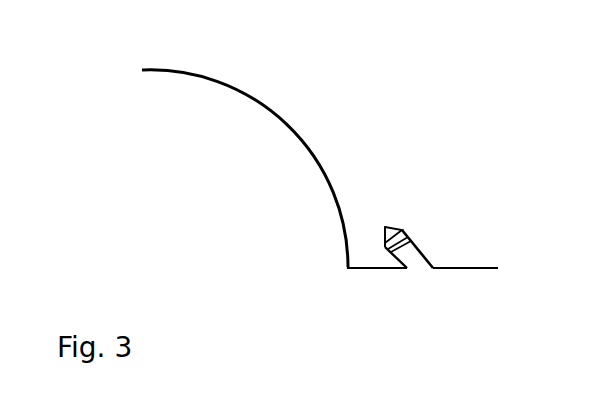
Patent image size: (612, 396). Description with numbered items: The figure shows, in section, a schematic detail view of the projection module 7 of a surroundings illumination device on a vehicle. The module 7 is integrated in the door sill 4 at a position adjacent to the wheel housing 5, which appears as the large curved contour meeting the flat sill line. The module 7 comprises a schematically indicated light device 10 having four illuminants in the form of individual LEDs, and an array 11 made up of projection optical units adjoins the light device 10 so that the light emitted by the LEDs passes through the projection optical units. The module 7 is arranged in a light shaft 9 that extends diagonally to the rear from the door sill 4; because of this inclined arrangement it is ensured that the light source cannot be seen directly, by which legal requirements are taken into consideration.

The door sill 4 is at (490, 273).
The wheel housing 5 is at (296, 132).
The projection module 7 is at (379, 204).
The light shaft 9 is at (417, 275).
The light device 10 is at (398, 230).
The array of projection optical units 11 is at (408, 242).